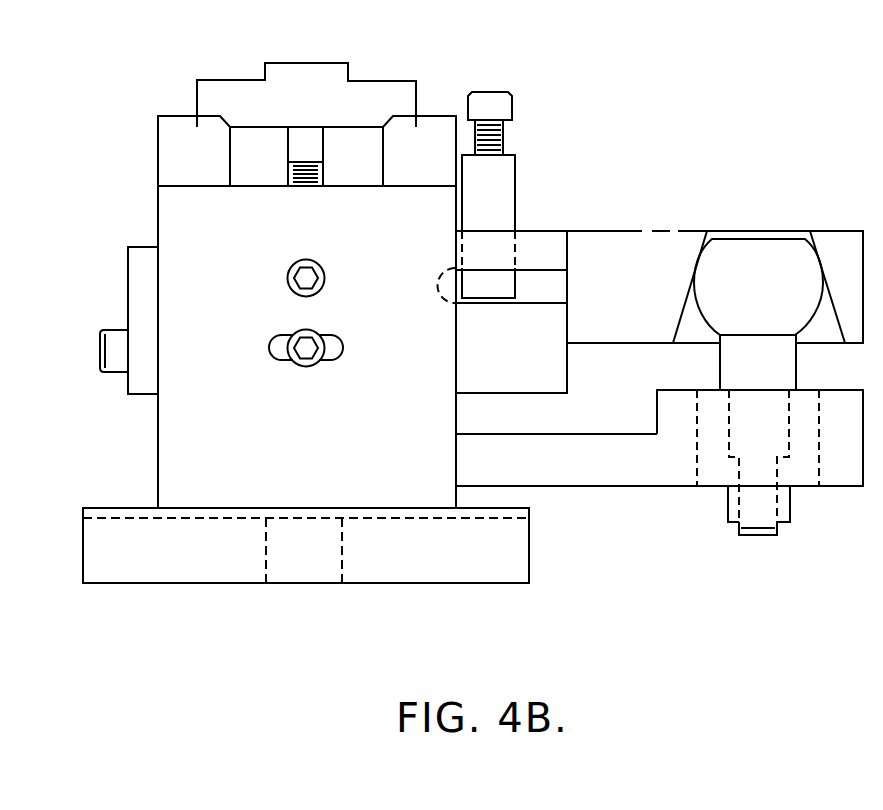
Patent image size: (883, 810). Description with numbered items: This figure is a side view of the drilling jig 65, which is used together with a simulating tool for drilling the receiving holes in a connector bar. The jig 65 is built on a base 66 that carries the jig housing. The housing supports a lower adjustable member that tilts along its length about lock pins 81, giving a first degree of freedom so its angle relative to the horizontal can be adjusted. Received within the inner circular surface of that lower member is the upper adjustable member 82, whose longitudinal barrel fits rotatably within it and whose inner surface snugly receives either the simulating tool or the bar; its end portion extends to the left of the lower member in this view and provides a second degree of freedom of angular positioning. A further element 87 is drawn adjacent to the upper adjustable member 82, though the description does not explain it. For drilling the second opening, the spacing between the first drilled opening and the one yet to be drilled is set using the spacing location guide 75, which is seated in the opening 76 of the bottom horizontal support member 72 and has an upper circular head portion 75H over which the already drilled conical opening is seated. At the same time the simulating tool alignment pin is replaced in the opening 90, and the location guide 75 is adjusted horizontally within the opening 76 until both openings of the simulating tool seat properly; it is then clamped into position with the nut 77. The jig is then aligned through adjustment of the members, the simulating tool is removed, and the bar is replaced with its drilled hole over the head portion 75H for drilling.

The drilling jig 65 is at (573, 196).
The upper adjustable member 82 is at (508, 92).
The clamp block 87 is at (515, 155).
The upper circular head portion 75H is at (767, 247).
The spacing location guide 75 is at (780, 361).
The bottom horizontal support member 72 is at (555, 450).
The opening 76 is at (795, 472).
The nut 77 is at (790, 510).
The lock pins 81 is at (315, 260).
The base 66 is at (462, 568).
The opening 90 is at (315, 568).